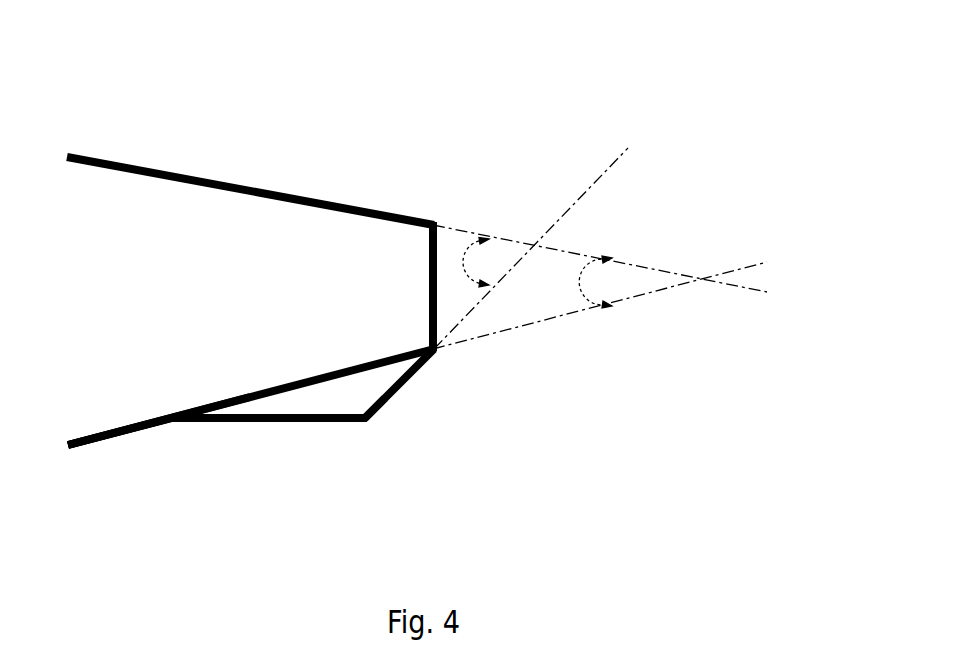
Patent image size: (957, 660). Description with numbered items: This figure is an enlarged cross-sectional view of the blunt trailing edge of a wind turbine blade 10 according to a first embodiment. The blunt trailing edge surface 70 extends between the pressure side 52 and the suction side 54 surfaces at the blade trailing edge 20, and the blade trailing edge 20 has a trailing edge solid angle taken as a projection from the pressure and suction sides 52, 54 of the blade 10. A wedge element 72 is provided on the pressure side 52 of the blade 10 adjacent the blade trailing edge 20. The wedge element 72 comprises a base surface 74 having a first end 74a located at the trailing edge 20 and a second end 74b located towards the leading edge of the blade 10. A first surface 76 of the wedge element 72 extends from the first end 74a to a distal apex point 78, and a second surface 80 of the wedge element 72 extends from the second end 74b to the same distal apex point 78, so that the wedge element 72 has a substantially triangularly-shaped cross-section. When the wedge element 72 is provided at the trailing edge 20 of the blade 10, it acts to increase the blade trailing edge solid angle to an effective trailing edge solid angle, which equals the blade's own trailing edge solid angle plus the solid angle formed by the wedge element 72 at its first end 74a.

The blade 10 is at (132, 309).
The blade trailing edge 20 is at (559, 93).
The pressure side 52 is at (137, 433).
The suction side 54 is at (294, 195).
The blunt trailing edge surface 70 is at (437, 313).
The wedge element 72 is at (327, 402).
The base surface 74 is at (338, 368).
The first end 74a is at (453, 371).
The second end 74b is at (179, 450).
The first surface 76 is at (400, 393).
The distal apex point 78 is at (365, 423).
The second surface 80 is at (258, 437).